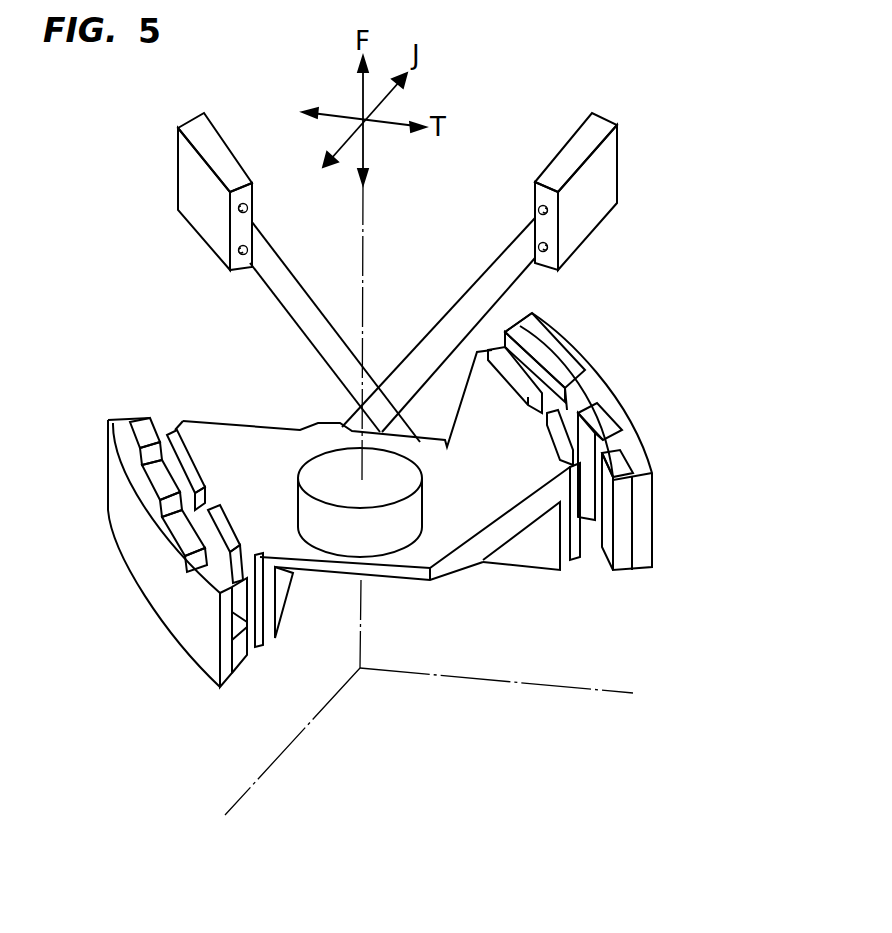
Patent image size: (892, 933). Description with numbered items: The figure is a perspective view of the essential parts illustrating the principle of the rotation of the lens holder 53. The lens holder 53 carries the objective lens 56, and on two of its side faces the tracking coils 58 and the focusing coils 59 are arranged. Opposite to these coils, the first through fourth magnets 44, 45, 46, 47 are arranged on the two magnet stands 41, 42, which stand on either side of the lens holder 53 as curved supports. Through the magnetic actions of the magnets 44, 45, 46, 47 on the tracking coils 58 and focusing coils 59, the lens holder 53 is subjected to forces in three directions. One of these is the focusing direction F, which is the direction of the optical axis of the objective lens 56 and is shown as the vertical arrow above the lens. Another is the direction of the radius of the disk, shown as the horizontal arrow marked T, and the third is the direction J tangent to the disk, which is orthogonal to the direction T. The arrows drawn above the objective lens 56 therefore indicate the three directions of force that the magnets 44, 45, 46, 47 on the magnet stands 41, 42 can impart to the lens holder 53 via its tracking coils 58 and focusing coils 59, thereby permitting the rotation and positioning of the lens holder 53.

The magnet stand 41 is at (200, 643).
The magnet stand 42 is at (642, 530).
The first magnet 44 is at (140, 420).
The second magnet 45 is at (162, 477).
The third magnet 46 is at (195, 540).
The fourth magnet 47 is at (243, 655).
The lens holder 53 is at (467, 545).
The objective lens 56 is at (382, 540).
The tracking coil 58 is at (187, 447).
The focusing coil 59 is at (230, 540).